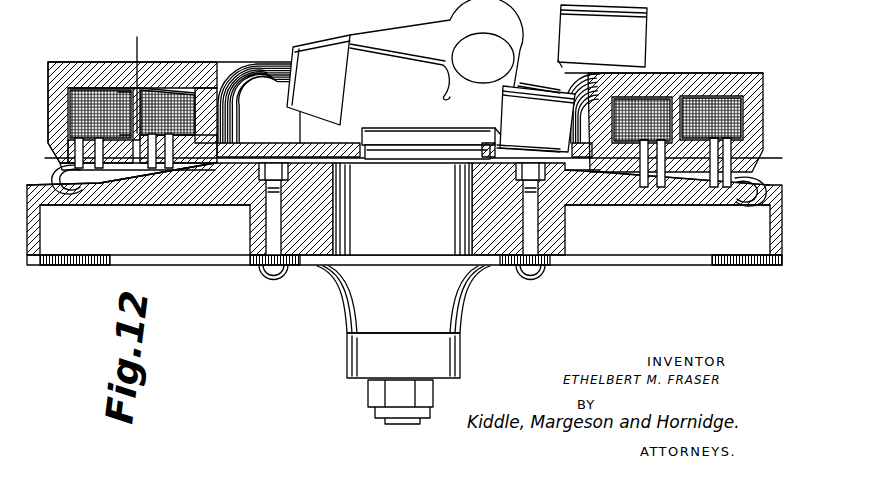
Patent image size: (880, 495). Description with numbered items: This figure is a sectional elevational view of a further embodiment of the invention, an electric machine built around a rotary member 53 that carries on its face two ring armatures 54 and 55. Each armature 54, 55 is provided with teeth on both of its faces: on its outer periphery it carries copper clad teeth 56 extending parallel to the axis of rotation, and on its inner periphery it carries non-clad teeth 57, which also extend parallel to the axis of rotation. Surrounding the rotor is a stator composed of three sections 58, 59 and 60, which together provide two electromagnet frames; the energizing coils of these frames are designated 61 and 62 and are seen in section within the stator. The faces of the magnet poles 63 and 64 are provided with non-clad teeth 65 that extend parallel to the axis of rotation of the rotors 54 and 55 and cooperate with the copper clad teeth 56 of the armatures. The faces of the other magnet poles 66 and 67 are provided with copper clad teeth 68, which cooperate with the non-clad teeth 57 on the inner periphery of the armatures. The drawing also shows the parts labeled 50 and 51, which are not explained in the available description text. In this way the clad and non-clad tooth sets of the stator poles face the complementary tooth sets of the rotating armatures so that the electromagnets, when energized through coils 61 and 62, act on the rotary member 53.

The rotor arm 50 is at (467, 79).
The frame plate 51 is at (107, 180).
The rotary member 53 is at (210, 183).
The ring armature 54 is at (88, 185).
The ring armature 55 is at (148, 172).
The copper clad teeth 56 is at (68, 142).
The non-clad teeth 57 is at (157, 170).
The stator section 58 is at (50, 62).
The stator section 59 is at (100, 62).
The stator section 60 is at (170, 72).
The energizing coil 61 is at (88, 100).
The energizing coil 62 is at (185, 93).
The magnet pole 63 is at (70, 162).
The magnet pole 64 is at (120, 92).
The non-clad teeth 65 is at (30, 176).
The magnet pole 66 is at (697, 163).
The magnet pole 67 is at (645, 165).
The copper clad teeth 68 is at (658, 183).